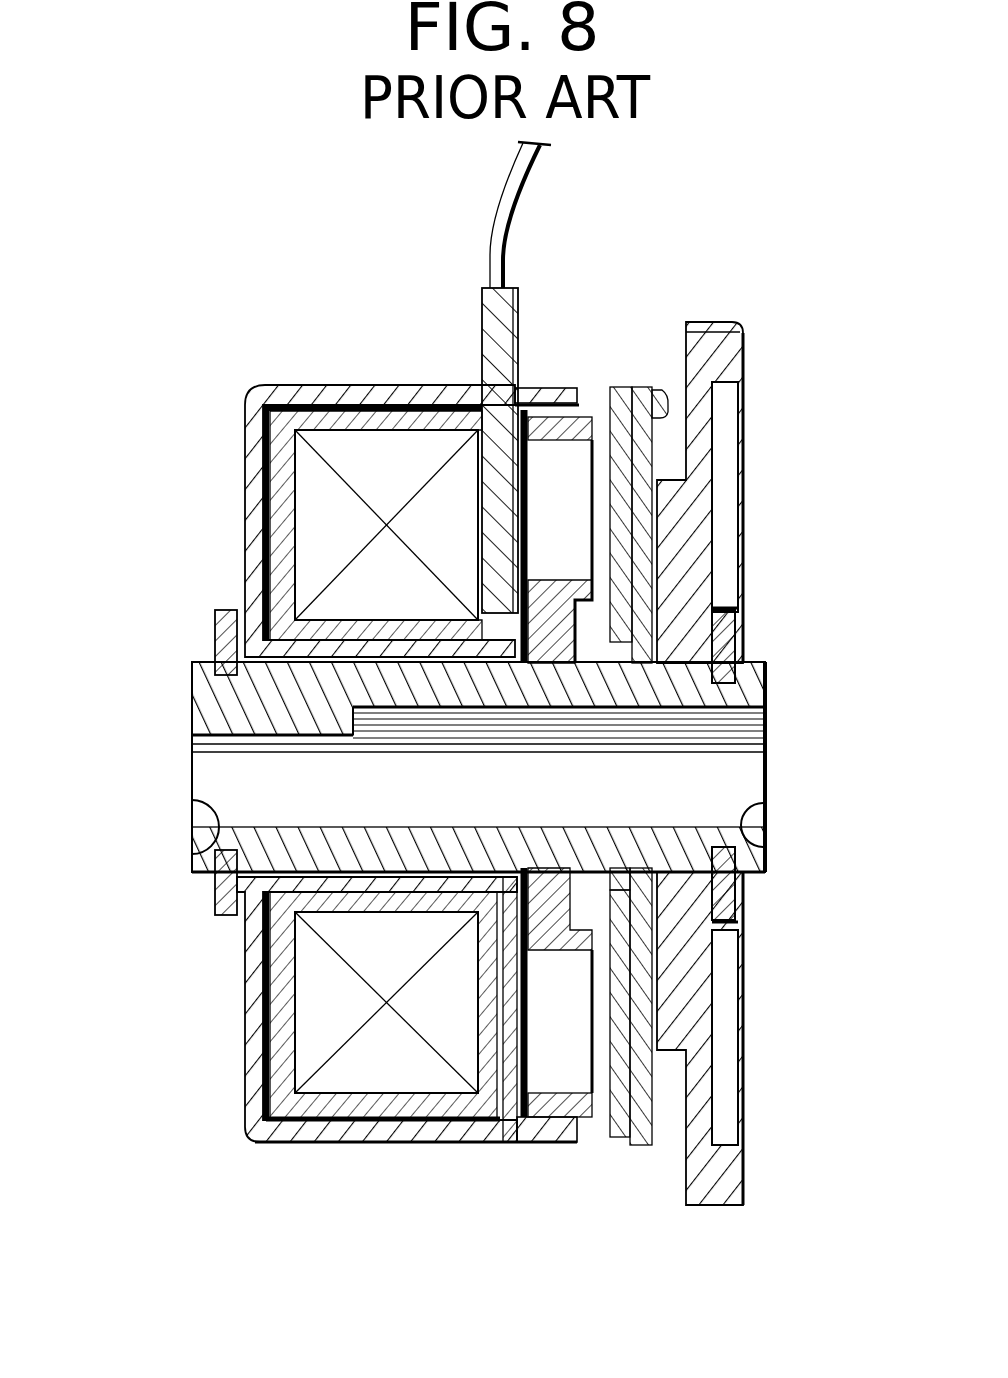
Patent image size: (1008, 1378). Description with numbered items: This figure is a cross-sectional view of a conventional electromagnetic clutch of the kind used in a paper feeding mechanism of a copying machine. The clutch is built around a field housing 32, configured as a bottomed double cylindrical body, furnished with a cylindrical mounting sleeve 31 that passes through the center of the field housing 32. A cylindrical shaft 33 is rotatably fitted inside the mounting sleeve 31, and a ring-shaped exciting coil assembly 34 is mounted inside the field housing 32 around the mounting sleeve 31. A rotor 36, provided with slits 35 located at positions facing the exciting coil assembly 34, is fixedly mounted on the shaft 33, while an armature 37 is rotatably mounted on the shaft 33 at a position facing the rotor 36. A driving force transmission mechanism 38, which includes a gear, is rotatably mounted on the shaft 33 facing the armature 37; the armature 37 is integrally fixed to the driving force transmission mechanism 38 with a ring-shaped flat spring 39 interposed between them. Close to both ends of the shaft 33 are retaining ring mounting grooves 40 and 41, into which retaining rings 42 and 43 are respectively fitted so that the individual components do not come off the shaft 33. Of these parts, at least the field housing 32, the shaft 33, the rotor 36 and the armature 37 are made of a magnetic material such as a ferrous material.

The mounting sleeve 31 is at (393, 657).
The field housing 32 is at (348, 388).
The shaft 33 is at (192, 712).
The exciting coil assembly 34 is at (308, 497).
The slits 35 is at (560, 445).
The rotor 36 is at (590, 415).
The armature 37 is at (603, 1133).
The driving force transmission mechanism 38 is at (735, 1188).
The flat spring 39 is at (637, 1130).
The retaining ring mounting groove 40 is at (200, 805).
The retaining ring mounting groove 41 is at (763, 808).
The retaining ring 42 is at (228, 905).
The retaining ring 43 is at (745, 895).